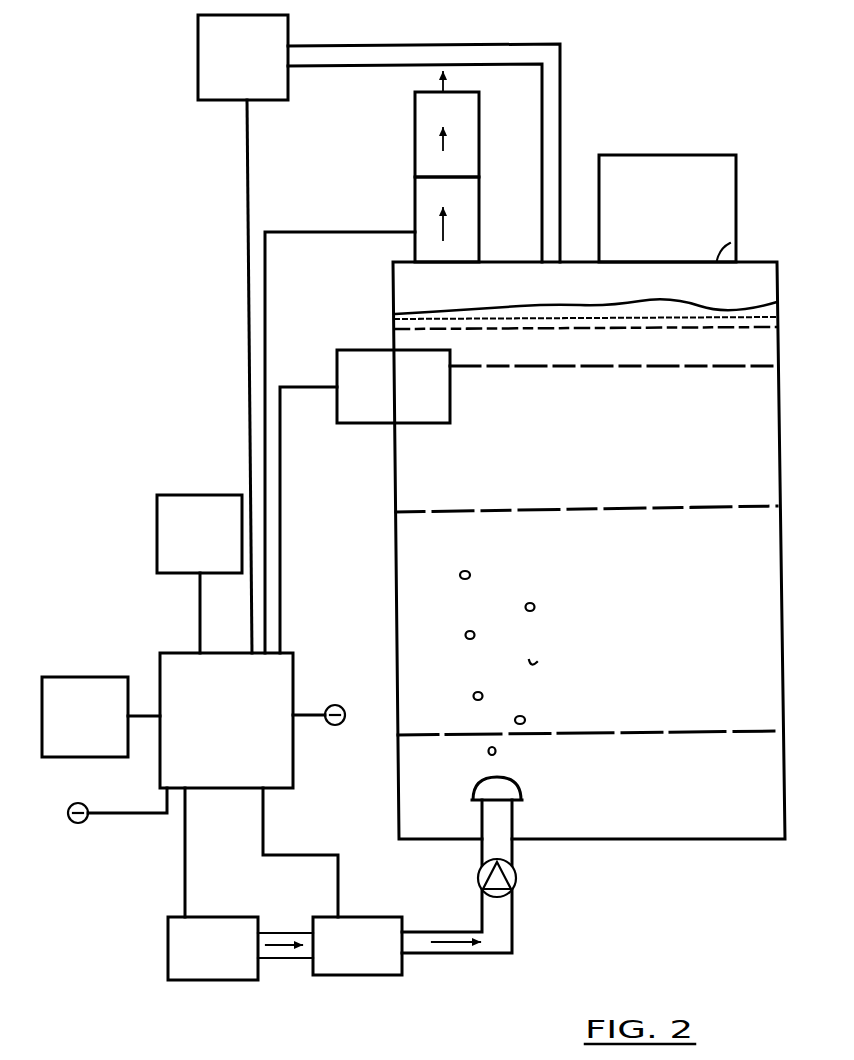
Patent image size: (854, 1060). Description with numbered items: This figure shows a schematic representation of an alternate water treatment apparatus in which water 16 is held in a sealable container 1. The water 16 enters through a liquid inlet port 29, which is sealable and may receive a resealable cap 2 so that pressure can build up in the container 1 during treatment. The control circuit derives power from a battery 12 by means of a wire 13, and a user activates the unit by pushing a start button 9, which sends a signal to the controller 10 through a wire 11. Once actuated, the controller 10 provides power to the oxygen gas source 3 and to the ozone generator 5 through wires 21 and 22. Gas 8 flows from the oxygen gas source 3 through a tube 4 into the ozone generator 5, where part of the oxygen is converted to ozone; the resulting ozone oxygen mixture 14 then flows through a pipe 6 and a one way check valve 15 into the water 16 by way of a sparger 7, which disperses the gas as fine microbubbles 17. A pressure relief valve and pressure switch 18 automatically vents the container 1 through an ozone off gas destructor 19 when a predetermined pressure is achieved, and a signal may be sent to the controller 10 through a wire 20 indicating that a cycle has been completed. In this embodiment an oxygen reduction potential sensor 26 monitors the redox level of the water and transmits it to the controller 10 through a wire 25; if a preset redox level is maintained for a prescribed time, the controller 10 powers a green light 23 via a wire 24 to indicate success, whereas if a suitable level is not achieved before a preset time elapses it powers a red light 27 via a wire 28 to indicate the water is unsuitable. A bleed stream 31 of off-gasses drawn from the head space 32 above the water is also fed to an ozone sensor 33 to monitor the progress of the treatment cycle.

The container 1 is at (781, 632).
The cap 2 is at (738, 210).
The oxygen gas source 3 is at (218, 920).
The tube 4 is at (293, 960).
The ozone generator 5 is at (343, 965).
The pipe 6 is at (515, 943).
The sparger 7 is at (522, 787).
The gas 8 is at (277, 950).
The start button 9 is at (215, 494).
The controller 10 is at (290, 677).
The wire 11 is at (198, 616).
The battery 12 is at (95, 677).
The wire 13 is at (146, 722).
The ozone oxygen mixture 14 is at (452, 958).
The one way check valve 15 is at (516, 882).
The water 16 is at (755, 446).
The microbubbles 17 is at (475, 573).
The pressure relief valve and pressure switch 18 is at (480, 215).
The ozone off gas destructor 19 is at (480, 126).
The wire 20 is at (328, 230).
The wire 21 is at (345, 892).
The wire 22 is at (180, 843).
The green light 23 is at (342, 703).
The wire 24 is at (308, 722).
The wire 25 is at (284, 527).
The oxygen reduction potential sensor 26 is at (370, 358).
The red light 27 is at (68, 806).
The wire 28 is at (100, 820).
The liquid inlet port 29 is at (727, 252).
The bleed stream 31 is at (560, 88).
The head space 32 is at (750, 289).
The ozone sensor 33 is at (196, 36).